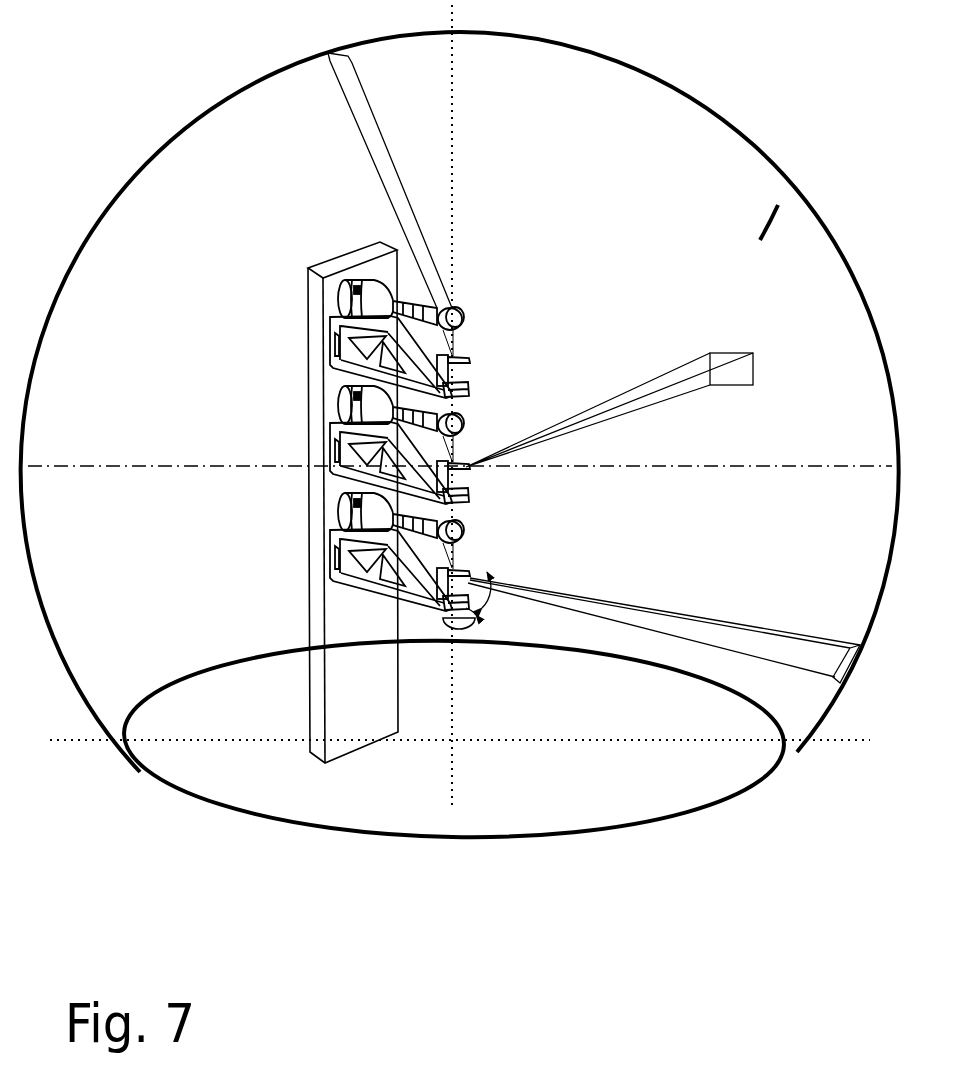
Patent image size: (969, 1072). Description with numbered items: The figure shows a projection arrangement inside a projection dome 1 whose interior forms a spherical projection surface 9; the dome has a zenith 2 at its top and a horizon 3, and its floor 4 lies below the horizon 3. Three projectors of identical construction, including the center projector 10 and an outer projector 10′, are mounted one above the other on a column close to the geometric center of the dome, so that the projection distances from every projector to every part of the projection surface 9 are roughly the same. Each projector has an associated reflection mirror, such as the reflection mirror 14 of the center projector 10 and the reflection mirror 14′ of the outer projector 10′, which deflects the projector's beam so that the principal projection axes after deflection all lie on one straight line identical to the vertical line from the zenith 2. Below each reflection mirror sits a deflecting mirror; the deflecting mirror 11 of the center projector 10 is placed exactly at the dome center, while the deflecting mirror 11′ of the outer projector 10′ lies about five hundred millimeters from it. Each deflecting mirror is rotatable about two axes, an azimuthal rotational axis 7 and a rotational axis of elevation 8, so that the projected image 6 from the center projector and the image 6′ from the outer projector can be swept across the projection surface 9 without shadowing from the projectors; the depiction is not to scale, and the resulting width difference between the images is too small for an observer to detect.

The projection dome 1 is at (577, 47).
The zenith 2 is at (453, 36).
The horizon 3 is at (805, 467).
The floor 4 is at (225, 693).
The projected image 6 is at (733, 353).
The projected image 6′ is at (858, 643).
The azimuthal rotational axis 7 is at (465, 630).
The rotational axis of elevation 8 is at (493, 607).
The projection surface 9 is at (793, 202).
The projector 10 is at (338, 385).
The projector 10′ is at (338, 515).
The deflecting mirror 11 is at (503, 482).
The deflecting mirror 11′ is at (506, 573).
The reflection mirror 14 is at (499, 408).
The reflection mirror 14′ is at (506, 523).